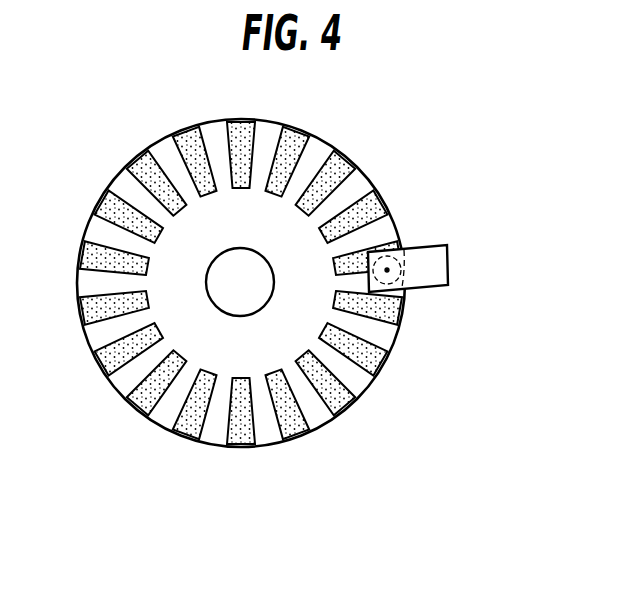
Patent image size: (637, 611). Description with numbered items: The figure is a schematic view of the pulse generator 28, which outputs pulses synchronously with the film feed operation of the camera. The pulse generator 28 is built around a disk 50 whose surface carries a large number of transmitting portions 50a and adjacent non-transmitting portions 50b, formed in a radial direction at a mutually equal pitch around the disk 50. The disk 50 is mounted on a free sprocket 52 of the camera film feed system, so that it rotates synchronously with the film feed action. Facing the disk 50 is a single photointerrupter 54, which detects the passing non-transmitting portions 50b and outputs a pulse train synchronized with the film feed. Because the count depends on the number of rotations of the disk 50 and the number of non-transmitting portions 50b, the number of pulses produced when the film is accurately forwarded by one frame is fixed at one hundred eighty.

The pulse generator 28 is at (357, 140).
The disk 50 is at (277, 322).
The transmitting portions 50a is at (315, 413).
The non-transmitting portions 50b is at (382, 366).
The free sprocket 52 is at (226, 296).
The photointerrupter 54 is at (407, 295).